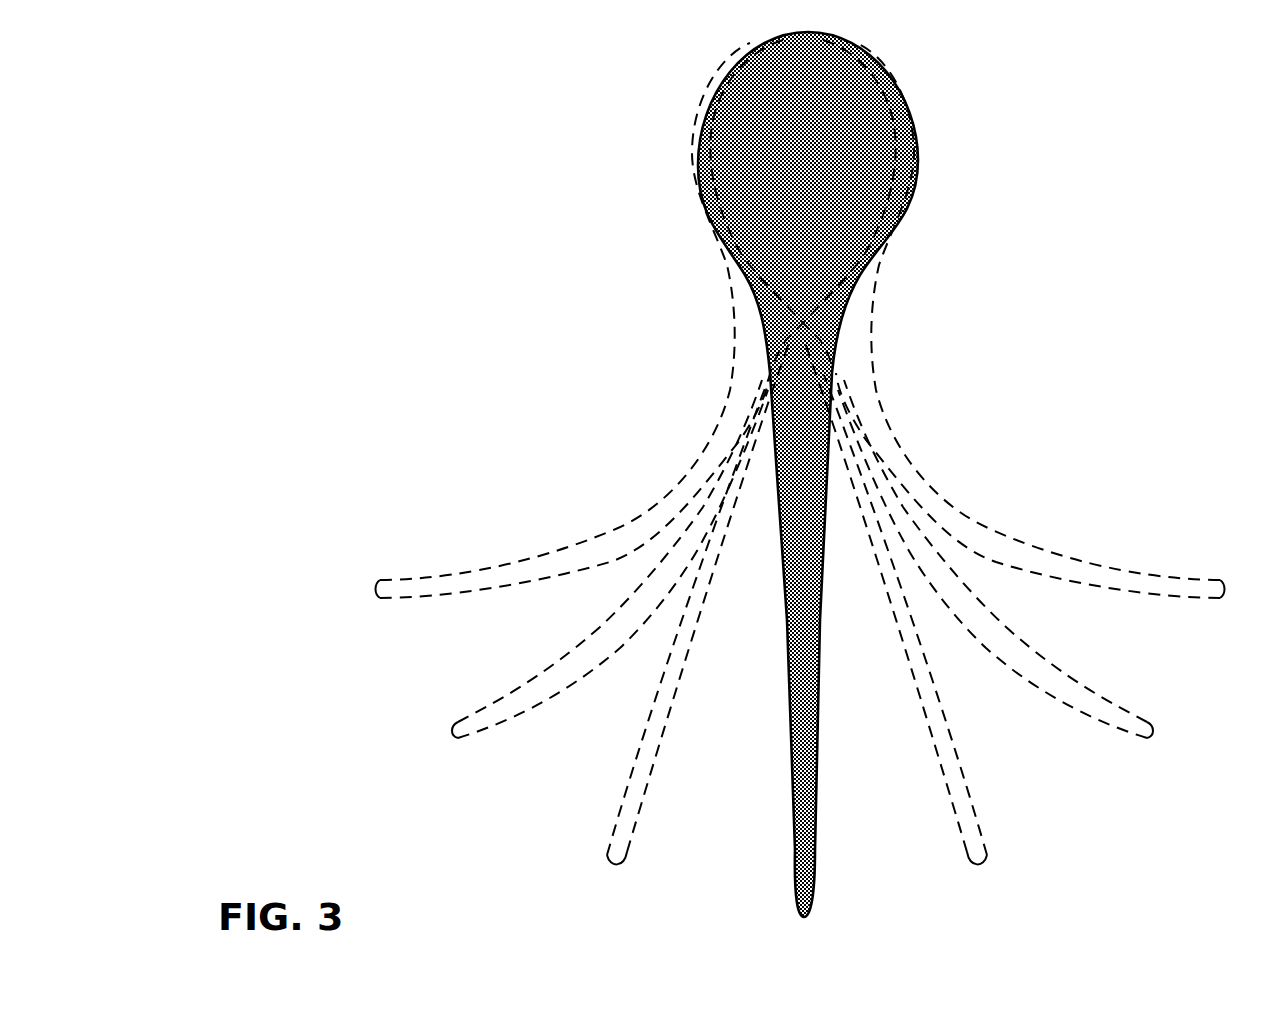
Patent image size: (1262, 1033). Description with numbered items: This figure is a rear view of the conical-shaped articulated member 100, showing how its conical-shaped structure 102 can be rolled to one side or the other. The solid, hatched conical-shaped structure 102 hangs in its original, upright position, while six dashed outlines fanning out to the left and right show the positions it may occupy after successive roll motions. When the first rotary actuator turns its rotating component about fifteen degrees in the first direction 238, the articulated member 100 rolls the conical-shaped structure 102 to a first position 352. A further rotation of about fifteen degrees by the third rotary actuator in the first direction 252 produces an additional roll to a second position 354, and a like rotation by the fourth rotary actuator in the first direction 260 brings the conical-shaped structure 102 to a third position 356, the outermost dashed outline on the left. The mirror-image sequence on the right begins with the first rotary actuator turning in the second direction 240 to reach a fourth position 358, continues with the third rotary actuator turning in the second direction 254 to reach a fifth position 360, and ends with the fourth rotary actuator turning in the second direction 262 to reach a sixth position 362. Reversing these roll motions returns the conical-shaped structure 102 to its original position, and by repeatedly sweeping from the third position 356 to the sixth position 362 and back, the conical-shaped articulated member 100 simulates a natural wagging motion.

The conical-shaped articulated member 100 is at (156, 95).
The conical-shaped structure 102 is at (820, 638).
The first direction 238 is at (782, 915).
The second direction 240 is at (891, 912).
The first direction 252 is at (480, 758).
The second direction 254 is at (1068, 816).
The first direction 260 is at (448, 717).
The second direction 262 is at (1204, 660).
The first position 352 is at (690, 672).
The second position 354 is at (538, 688).
The third position 356 is at (552, 560).
The fourth position 358 is at (915, 672).
The fifth position 360 is at (1064, 688).
The sixth position 362 is at (1044, 560).